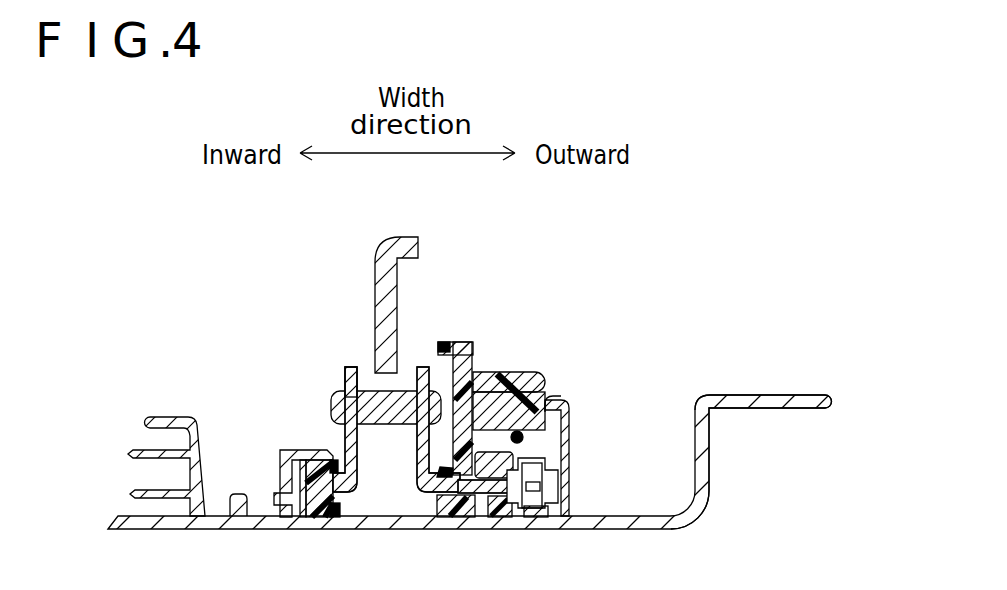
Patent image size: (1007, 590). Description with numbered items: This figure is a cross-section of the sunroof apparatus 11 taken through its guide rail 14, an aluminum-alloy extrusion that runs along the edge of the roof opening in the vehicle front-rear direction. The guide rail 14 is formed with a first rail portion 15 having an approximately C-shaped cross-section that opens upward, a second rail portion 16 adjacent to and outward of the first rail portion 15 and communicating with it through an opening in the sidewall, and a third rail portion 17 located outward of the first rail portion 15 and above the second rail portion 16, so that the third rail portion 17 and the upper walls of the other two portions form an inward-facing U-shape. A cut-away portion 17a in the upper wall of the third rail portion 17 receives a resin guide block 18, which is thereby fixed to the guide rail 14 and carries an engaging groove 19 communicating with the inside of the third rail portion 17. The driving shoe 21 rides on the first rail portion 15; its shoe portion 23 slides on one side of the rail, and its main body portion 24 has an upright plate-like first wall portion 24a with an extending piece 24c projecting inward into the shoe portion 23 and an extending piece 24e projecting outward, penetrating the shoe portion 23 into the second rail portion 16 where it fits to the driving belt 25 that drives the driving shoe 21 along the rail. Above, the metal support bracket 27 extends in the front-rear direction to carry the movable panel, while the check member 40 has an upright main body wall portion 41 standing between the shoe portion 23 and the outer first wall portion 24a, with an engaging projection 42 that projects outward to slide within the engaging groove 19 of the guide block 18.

The sunroof apparatus 11 is at (660, 271).
The guide rail 14 is at (778, 499).
The first rail portion 15 is at (405, 514).
The second rail portion 16 is at (533, 517).
The third rail portion 17 is at (566, 422).
The cut-away portion 17a is at (548, 395).
The guide block 18 is at (507, 372).
The engaging groove 19 is at (480, 360).
The driving shoe 21 is at (343, 367).
The shoe portion 23 is at (290, 528).
The main body portion 24 is at (340, 428).
The first wall portion 24a is at (345, 378).
The extending piece 24c is at (320, 518).
The extending piece 24e is at (558, 489).
The driving belt 25 is at (560, 448).
The support bracket 27 is at (417, 237).
The check member 40 is at (473, 363).
The main body wall portion 41 is at (442, 500).
The engaging projection 42 is at (516, 372).